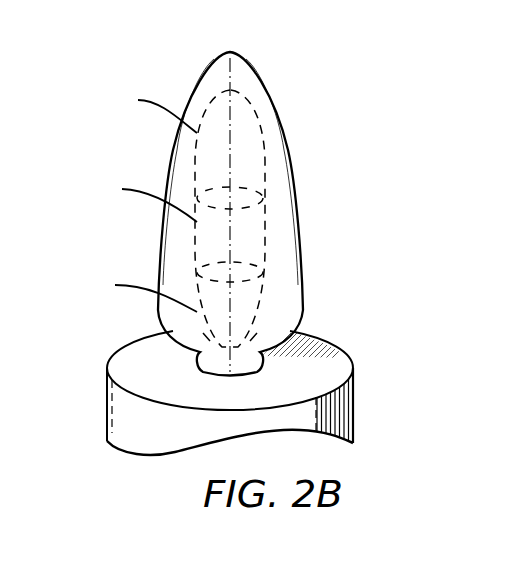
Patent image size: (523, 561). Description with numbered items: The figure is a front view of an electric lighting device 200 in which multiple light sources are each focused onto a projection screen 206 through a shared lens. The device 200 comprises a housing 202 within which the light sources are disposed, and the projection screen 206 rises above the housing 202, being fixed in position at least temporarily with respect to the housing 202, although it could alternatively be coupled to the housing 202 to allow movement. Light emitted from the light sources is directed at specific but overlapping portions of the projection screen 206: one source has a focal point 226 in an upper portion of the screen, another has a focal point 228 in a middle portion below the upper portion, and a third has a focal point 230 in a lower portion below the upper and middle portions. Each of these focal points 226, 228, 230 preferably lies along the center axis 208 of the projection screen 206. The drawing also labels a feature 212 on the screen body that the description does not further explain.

The electric lighting device 200 is at (320, 76).
The housing 202 is at (353, 398).
The projection screen 206 is at (203, 57).
The center axis 208 is at (232, 68).
The applicator body 212 is at (300, 199).
The focal point 226 is at (233, 146).
The focal point 228 is at (233, 233).
The focal point 230 is at (233, 303).